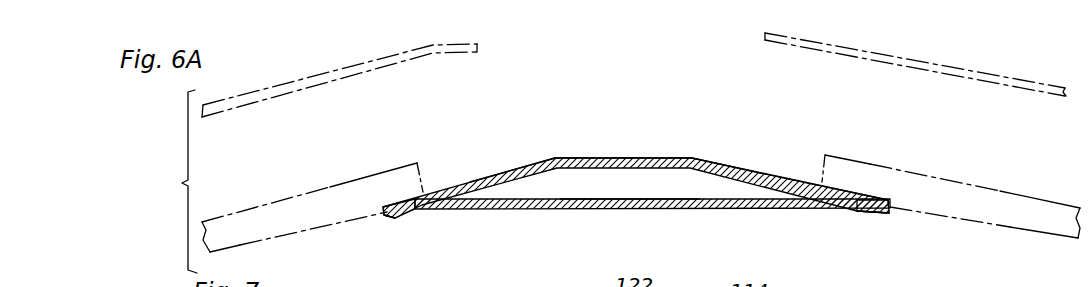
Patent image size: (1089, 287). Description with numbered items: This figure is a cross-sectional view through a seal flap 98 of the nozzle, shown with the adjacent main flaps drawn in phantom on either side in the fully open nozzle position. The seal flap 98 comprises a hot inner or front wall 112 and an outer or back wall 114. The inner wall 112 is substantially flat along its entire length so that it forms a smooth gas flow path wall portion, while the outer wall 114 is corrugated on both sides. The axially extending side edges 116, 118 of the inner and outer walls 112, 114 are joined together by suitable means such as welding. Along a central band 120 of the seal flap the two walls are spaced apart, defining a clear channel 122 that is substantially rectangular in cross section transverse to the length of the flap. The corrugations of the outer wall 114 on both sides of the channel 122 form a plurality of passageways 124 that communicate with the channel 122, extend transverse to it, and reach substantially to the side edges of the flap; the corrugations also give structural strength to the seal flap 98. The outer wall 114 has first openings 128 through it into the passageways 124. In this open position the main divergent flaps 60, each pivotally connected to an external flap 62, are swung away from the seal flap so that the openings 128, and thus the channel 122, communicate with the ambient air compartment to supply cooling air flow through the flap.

The main divergent flap 60 is at (325, 187).
The external flap 62 is at (293, 82).
The seal flap 98 is at (513, 160).
The inner wall 112 is at (773, 208).
The outer wall 114 is at (787, 178).
The side edge of inner wall 116 is at (390, 217).
The side edge of outer wall 118 is at (385, 212).
The central band 120 is at (687, 153).
The channel 122 is at (697, 162).
The passageways 124 is at (708, 188).
The first openings 128 is at (487, 178).